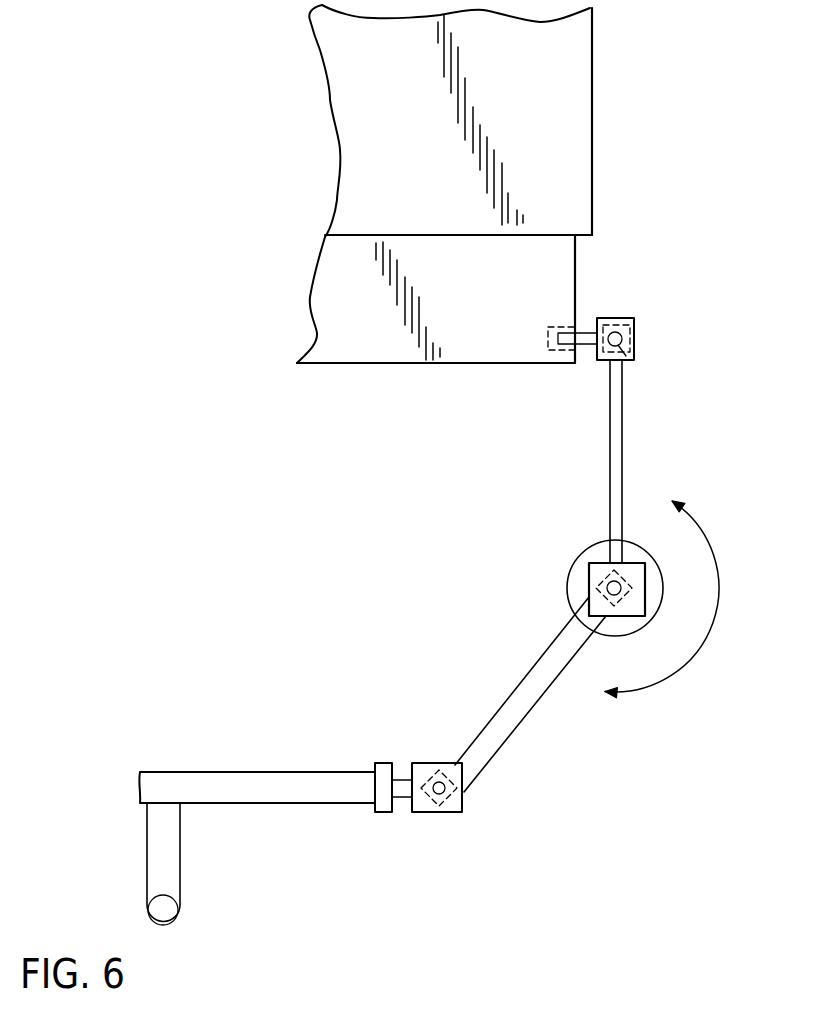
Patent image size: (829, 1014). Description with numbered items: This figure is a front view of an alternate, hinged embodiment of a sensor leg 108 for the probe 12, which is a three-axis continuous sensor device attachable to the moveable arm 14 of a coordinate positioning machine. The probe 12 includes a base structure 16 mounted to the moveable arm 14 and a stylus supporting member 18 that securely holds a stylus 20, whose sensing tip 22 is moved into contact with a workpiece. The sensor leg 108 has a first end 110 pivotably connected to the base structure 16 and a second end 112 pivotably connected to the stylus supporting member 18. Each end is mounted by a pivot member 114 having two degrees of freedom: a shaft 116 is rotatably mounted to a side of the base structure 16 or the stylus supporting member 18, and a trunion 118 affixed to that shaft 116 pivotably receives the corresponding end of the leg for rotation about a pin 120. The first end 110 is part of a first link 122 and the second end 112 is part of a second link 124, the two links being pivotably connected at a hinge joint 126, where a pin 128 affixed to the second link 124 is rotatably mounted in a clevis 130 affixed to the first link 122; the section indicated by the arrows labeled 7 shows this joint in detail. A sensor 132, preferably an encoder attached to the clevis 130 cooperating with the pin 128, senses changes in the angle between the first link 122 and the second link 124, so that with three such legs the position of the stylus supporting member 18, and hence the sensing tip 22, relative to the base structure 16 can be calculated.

The section line for FIG. 7 is at (660, 601).
The probe 12 is at (765, 260).
The moveable arm 14 is at (572, 120).
The base structure 16 is at (565, 253).
The stylus supporting member 18 is at (243, 798).
The stylus 20 is at (168, 863).
The sensing tip 22 is at (165, 910).
The sensor leg 108 is at (688, 422).
The first end 110 is at (643, 333).
The second end 112 is at (433, 815).
The pivot member 114 is at (637, 348).
The shaft 116 is at (583, 333).
The trunion 118 is at (597, 360).
The pin 120 is at (622, 352).
The first link 122 is at (612, 407).
The second link 124 is at (560, 636).
The hinge joint 126 is at (578, 538).
The pin 128 is at (620, 596).
The clevis 130 is at (633, 562).
The sensor 132 is at (567, 578).